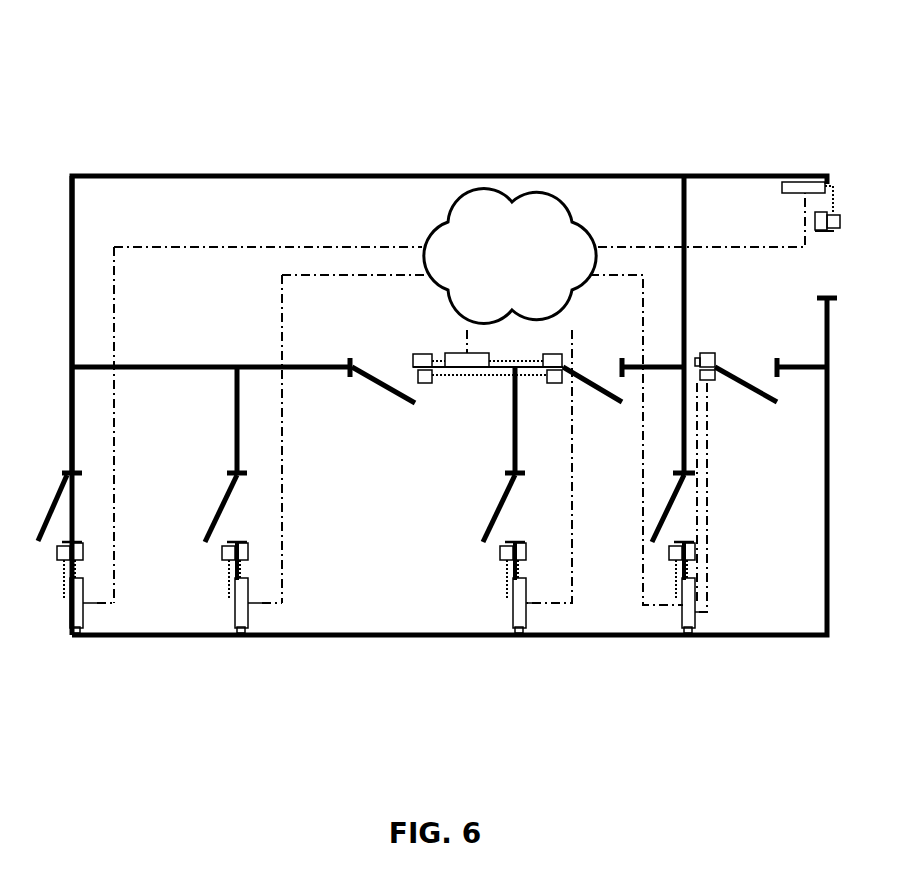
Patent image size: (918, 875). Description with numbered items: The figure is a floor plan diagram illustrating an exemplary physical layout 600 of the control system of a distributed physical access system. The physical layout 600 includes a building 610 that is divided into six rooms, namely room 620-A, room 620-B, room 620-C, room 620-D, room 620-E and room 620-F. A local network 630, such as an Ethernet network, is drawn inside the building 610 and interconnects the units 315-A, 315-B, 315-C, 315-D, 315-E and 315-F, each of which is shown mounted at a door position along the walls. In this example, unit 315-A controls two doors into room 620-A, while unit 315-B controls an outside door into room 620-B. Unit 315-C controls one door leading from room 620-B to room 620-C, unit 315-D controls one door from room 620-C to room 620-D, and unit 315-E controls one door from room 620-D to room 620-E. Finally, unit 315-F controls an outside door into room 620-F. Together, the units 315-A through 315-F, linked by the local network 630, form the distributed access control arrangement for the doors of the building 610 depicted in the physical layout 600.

The physical layout 600 is at (184, 64).
The building 610 is at (375, 176).
The room 620-A is at (449, 284).
The room 620-B is at (180, 425).
The room 620-C is at (403, 439).
The room 620-D is at (605, 440).
The room 620-E is at (741, 482).
The room 620-F is at (757, 274).
The local network 630 is at (510, 256).
The unit 315-A is at (445, 353).
The unit 315-B is at (76, 637).
The unit 315-C is at (241, 637).
The unit 315-D is at (519, 637).
The unit 315-E is at (688, 637).
The unit 315-F is at (801, 182).